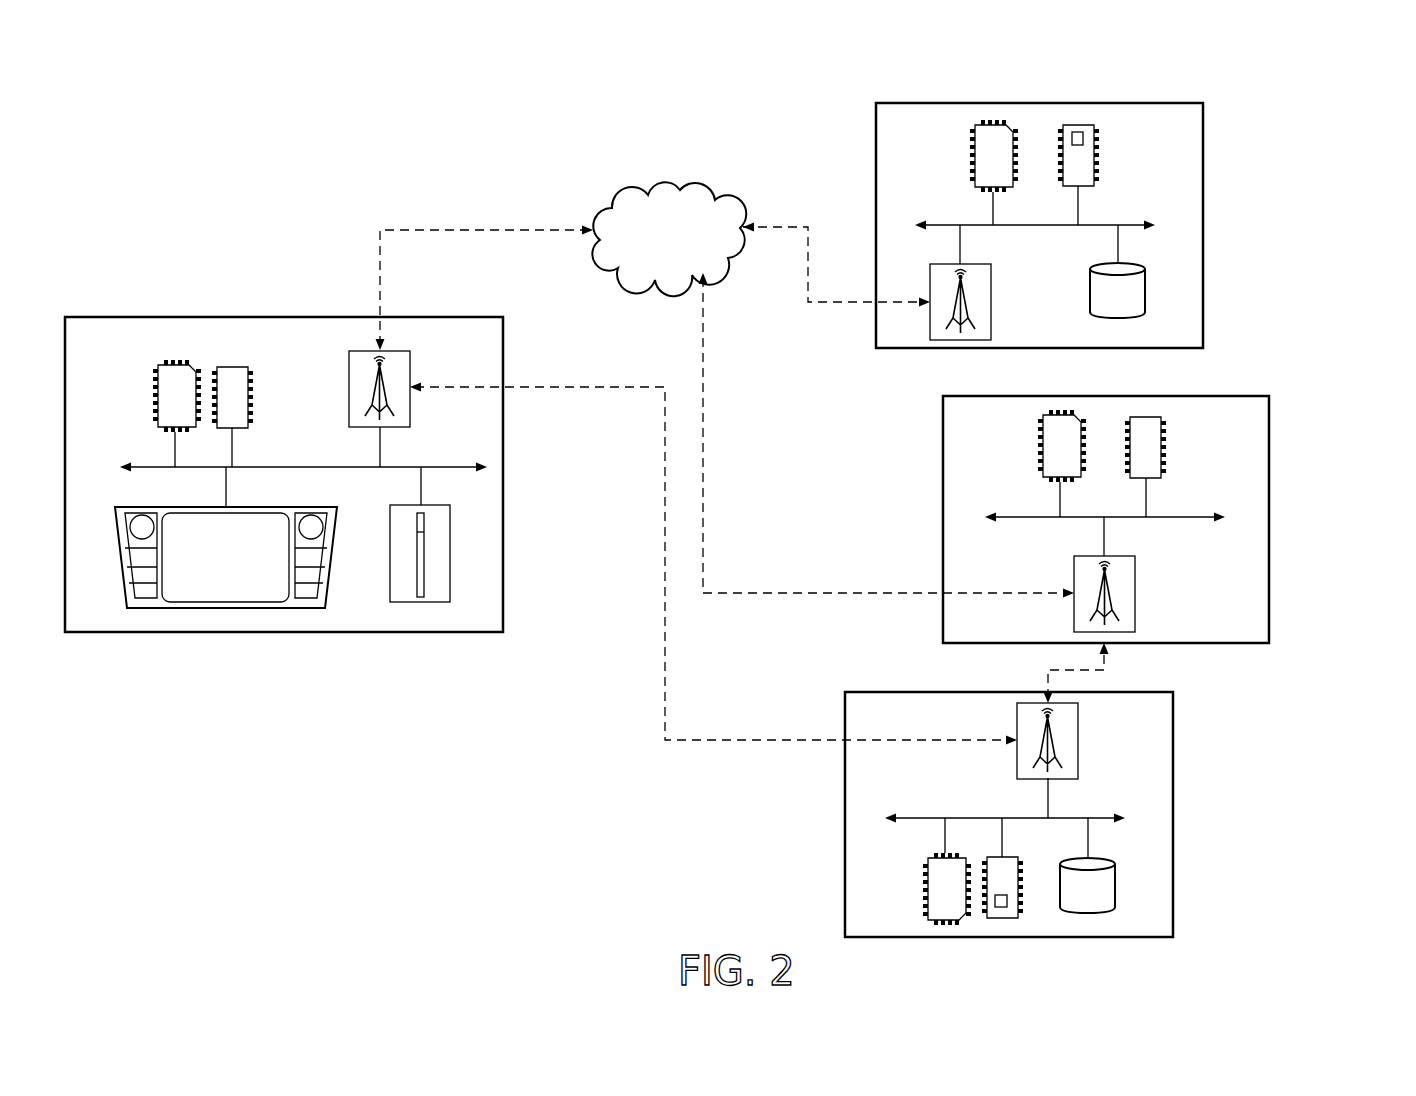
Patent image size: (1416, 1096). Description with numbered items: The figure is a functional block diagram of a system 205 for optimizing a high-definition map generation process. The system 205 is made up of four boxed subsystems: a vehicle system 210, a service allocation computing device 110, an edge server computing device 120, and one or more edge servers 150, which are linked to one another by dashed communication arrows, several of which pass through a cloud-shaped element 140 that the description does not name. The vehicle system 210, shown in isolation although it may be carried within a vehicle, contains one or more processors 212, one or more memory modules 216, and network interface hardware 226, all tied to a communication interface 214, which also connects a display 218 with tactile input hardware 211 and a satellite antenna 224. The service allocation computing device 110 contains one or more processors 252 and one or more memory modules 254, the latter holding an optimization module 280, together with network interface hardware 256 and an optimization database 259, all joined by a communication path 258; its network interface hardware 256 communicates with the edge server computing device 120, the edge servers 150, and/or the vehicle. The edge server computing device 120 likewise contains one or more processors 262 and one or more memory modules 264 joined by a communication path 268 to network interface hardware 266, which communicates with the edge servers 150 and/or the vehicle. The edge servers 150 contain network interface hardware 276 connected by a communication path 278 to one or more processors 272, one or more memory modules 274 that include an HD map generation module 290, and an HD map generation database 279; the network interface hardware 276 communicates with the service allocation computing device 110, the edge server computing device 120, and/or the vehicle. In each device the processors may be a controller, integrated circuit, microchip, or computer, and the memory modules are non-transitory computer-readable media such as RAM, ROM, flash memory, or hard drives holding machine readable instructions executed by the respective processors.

The system 205 is at (1369, 112).
The network 140 is at (657, 187).
The vehicle system 210 is at (100, 316).
The one or more processors 212 is at (158, 380).
The one or more memory modules 216 is at (250, 376).
The network interface hardware 226 is at (410, 365).
The communication interface 214 is at (452, 467).
The display 218 is at (213, 608).
The tactile input hardware 211 is at (309, 515).
The satellite antenna 224 is at (425, 602).
The service allocation computing device 110 is at (1203, 225).
The one or more processors 252 is at (975, 140).
The one or more memory modules 254 is at (1094, 140).
The optimization module 280 is at (1077, 132).
The communication path 258 is at (1123, 225).
The network interface hardware 256 is at (992, 300).
The optimization database 259 is at (1145, 295).
The edge server computing device 120 is at (1269, 518).
The one or more processors 262 is at (1043, 430).
The one or more memory modules 264 is at (1162, 432).
The communication path 268 is at (1188, 517).
The network interface hardware 266 is at (1135, 593).
The one or more edge servers 150 is at (1173, 815).
The network interface hardware 276 is at (1078, 740).
The communication path 278 is at (933, 818).
The one or more processors 272 is at (928, 870).
The one or more memory modules 274 is at (992, 918).
The HD map generation module 290 is at (1001, 907).
The HD map generation database 279 is at (1088, 912).